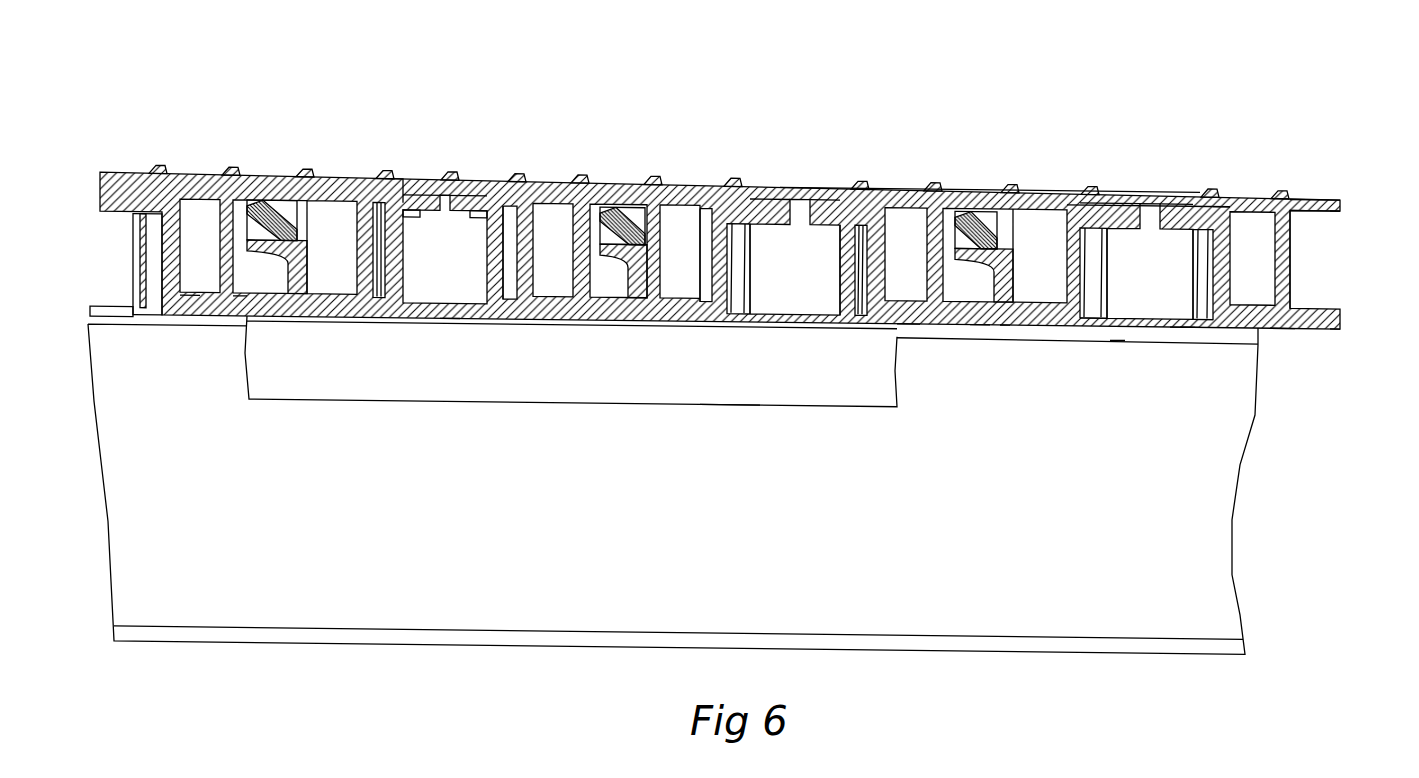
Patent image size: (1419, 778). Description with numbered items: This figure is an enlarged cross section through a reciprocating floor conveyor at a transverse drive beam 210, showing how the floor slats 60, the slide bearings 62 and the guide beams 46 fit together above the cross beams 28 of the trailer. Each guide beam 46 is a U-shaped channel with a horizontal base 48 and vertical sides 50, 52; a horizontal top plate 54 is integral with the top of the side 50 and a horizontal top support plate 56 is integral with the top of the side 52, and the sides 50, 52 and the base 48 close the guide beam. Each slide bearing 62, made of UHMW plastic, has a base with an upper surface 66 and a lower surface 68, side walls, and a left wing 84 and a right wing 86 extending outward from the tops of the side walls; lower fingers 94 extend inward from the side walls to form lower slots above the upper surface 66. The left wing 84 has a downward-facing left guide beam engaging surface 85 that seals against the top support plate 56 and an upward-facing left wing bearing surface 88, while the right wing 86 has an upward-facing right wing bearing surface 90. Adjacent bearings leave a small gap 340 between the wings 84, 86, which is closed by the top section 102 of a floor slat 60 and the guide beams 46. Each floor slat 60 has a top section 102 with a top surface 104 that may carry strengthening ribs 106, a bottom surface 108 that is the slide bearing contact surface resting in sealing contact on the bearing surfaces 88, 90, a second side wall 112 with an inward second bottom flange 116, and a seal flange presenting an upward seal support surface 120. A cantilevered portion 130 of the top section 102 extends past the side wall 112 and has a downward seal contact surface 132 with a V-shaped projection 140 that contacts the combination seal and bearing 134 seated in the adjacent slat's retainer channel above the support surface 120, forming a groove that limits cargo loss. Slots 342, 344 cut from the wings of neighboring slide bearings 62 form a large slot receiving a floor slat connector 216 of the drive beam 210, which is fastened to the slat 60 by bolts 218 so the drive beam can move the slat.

The cross beams 28 is at (379, 597).
The guide beam 46 is at (1117, 316).
The horizontal base 48 is at (1187, 316).
The vertical side 50 is at (1087, 313).
The vertical side 52 is at (1208, 307).
The horizontal top plate 54 is at (765, 220).
The horizontal top support plate 56 is at (830, 225).
The floor slat 60 is at (1150, 182).
The slide bearing 62 is at (980, 316).
The upper surface 66 is at (1350, 315).
The lower surface 68 is at (188, 316).
The left wing 84 is at (820, 179).
The left guide beam engaging surface 85 is at (1175, 215).
The right wing 86 is at (1130, 215).
The left wing bearing surface 88 is at (1110, 181).
The right wing bearing surface 90 is at (1220, 182).
The lower finger 94 is at (527, 284).
The top section 102 is at (795, 178).
The top surface 104 is at (760, 178).
The ribs 106 is at (933, 179).
The bottom surface 108 is at (118, 212).
The second side wall 112 is at (1290, 250).
The second bottom flange 116 is at (908, 318).
The seal support surface 120 is at (237, 322).
The cantilevered portion 130 is at (1378, 115).
The seal contact surface 132 is at (1310, 200).
The combination seal and bearing 134 is at (268, 195).
The V-shaped projection 140 is at (1340, 197).
The drive beam 210 is at (660, 370).
The floor slat connector 216 is at (447, 318).
The bolts 218 is at (447, 175).
The gap 340 is at (1182, 316).
The slot 342 is at (388, 173).
The slot 344 is at (500, 177).